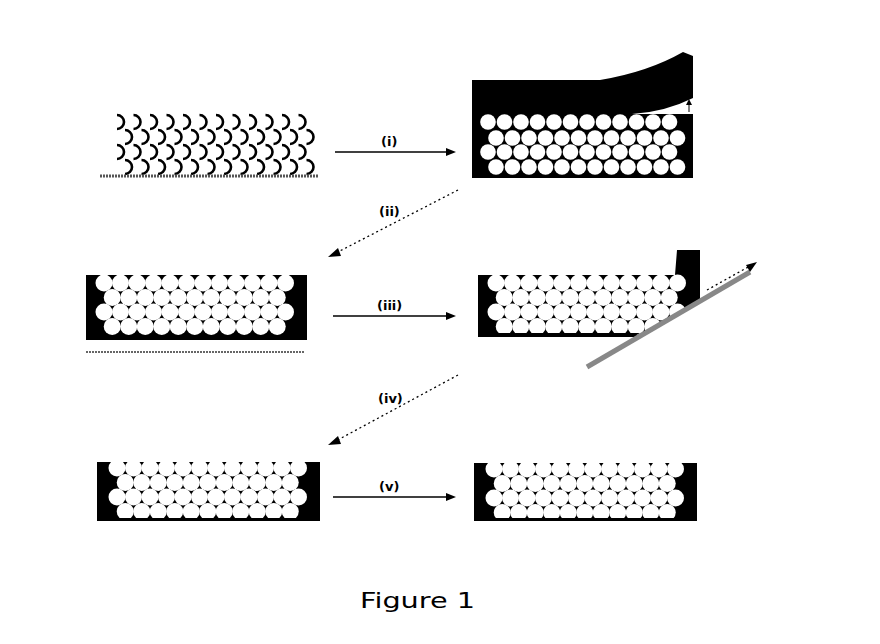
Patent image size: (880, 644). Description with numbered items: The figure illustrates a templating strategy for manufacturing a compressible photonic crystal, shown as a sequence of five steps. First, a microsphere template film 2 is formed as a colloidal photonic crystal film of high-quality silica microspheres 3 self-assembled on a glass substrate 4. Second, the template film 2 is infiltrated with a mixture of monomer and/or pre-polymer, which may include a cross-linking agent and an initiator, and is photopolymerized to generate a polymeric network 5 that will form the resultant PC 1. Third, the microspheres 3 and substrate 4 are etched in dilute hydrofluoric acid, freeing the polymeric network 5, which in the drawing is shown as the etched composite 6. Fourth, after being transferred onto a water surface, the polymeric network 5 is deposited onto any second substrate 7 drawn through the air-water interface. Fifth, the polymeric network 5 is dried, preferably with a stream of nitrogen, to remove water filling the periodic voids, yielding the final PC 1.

The PC 1 is at (714, 456).
The microsphere template film 2 is at (191, 110).
The microspheres 3 is at (147, 117).
The glass substrate 4 is at (100, 176).
The polymeric network 5 is at (485, 80).
The composite film 6 is at (92, 262).
The second substrate 7 is at (733, 288).